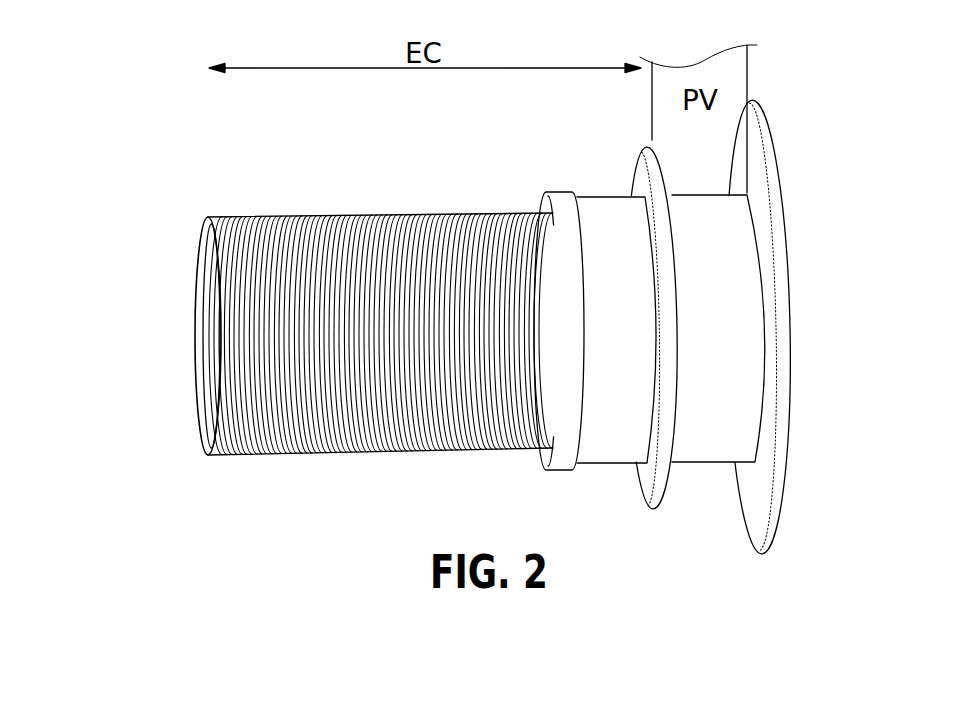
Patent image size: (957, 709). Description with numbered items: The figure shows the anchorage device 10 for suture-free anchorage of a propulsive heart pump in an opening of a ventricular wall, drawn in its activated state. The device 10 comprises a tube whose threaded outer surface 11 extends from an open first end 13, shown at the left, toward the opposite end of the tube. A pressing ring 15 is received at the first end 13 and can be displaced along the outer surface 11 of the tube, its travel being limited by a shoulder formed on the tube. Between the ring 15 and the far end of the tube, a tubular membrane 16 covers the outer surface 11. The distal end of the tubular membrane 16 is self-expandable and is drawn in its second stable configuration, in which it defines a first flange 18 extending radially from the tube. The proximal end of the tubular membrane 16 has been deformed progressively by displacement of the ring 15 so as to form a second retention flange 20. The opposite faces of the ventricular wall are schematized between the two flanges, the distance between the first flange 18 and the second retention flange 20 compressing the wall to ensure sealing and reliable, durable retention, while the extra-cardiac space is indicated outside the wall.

The anchorage device 10 is at (155, 193).
The outer surface 11 is at (326, 232).
The first end 13 is at (207, 380).
The pressing ring 15 is at (560, 204).
The tubular membrane 16 is at (607, 197).
The first flange 18 is at (773, 142).
The second retention flange 20 is at (647, 478).